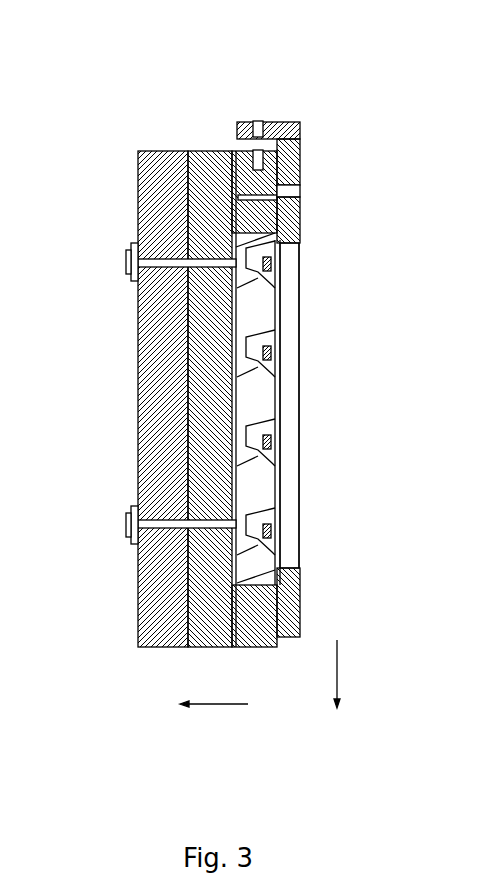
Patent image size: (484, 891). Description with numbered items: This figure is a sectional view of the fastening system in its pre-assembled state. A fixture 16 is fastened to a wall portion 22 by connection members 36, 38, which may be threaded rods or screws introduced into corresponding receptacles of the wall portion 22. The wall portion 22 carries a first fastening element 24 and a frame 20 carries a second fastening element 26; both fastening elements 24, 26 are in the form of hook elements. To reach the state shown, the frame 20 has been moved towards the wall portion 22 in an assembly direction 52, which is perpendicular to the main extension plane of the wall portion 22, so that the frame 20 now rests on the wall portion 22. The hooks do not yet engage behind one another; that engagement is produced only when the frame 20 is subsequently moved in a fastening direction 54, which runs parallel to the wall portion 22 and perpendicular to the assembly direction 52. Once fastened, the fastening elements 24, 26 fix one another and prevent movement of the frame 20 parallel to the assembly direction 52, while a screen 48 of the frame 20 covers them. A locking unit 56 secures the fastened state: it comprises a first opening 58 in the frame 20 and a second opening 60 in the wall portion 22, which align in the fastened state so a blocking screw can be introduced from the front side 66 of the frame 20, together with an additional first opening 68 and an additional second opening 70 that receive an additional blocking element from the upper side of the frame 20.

The fixture 16 is at (260, 319).
The frame 20 is at (323, 605).
The wall portion 22 is at (121, 158).
The first fastening element 24 is at (237, 568).
The second fastening element 26 is at (268, 513).
The connection member 36 is at (117, 262).
The connection member 38 is at (117, 524).
The screen 48 is at (300, 150).
The assembly direction 52 is at (213, 705).
The fastening direction 54 is at (337, 663).
The locking unit 56 is at (313, 114).
The first opening 58 is at (303, 193).
The second opening 60 is at (193, 148).
The front side 66 is at (325, 378).
The additional first opening 68 is at (262, 119).
The additional second opening 70 is at (247, 159).